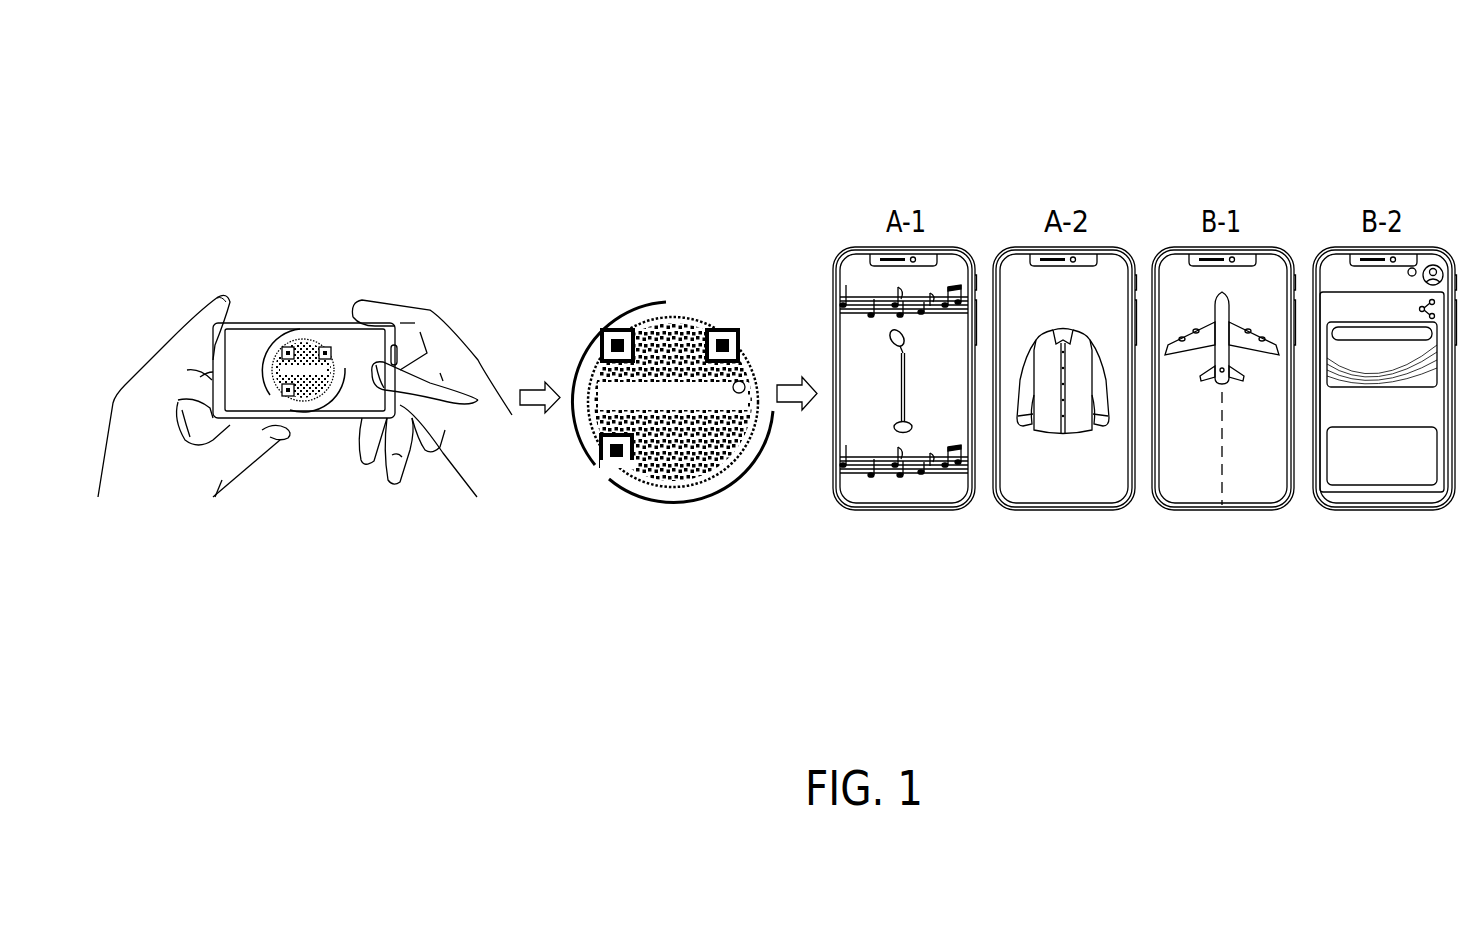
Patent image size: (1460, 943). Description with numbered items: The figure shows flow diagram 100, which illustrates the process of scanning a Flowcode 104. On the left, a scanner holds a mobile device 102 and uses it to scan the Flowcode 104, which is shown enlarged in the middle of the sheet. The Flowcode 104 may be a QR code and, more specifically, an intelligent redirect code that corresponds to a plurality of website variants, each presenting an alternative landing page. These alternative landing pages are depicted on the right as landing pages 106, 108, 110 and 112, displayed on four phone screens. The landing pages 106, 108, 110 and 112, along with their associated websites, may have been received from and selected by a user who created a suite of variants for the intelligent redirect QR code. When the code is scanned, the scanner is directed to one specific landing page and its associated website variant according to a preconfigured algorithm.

The flow diagram 100 is at (214, 97).
The mobile device 102 is at (322, 480).
The Flowcode 104 is at (673, 497).
The landing page 106 is at (903, 512).
The landing page 108 is at (1065, 512).
The landing page 110 is at (1220, 512).
The landing page 112 is at (1385, 512).